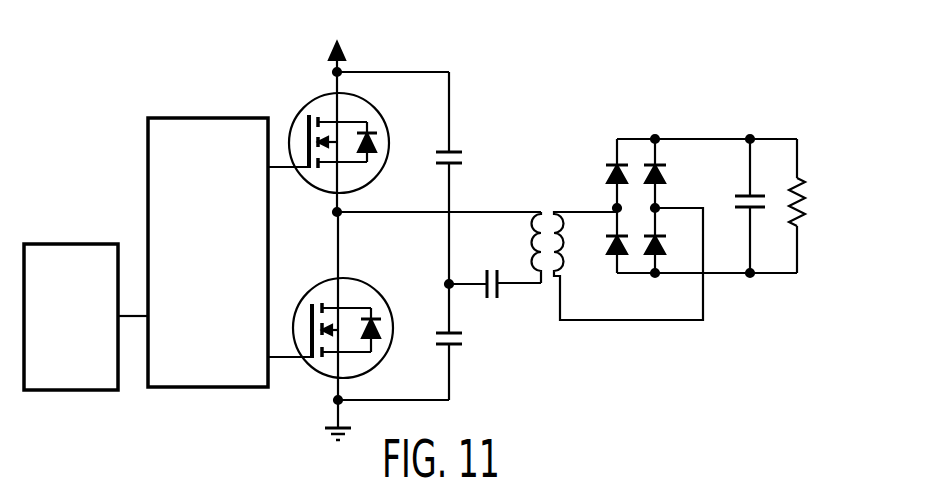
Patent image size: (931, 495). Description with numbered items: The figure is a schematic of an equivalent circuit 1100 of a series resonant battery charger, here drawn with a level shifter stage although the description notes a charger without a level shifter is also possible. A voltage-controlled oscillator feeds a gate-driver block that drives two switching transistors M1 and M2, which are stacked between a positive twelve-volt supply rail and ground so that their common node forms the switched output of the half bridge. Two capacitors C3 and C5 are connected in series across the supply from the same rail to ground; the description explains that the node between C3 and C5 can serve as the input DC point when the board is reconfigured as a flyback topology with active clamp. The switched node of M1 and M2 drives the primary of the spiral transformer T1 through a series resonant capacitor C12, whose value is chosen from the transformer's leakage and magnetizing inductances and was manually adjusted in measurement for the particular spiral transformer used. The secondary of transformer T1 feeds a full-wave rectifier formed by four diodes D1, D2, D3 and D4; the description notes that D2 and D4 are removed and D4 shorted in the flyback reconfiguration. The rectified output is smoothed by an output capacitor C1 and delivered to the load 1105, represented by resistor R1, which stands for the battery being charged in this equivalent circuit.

The resonant power supply circuit 1100 is at (430, 225).
The load resistor R1 1105 is at (813, 187).
The high-side MOSFET M1 is at (353, 143).
The low-side MOSFET M2 is at (357, 324).
The capacitor C3 is at (468, 157).
The capacitor C5 is at (469, 342).
The resonant capacitor C12 is at (495, 269).
The transformer T1 is at (618, 250).
The rectifier diode D1 is at (603, 175).
The rectification diode D2 is at (667, 175).
The rectifier diode D3 is at (603, 245).
The rectification diode D4 is at (668, 245).
The output filter capacitor C1 is at (735, 206).
The load resistor R1 is at (813, 206).